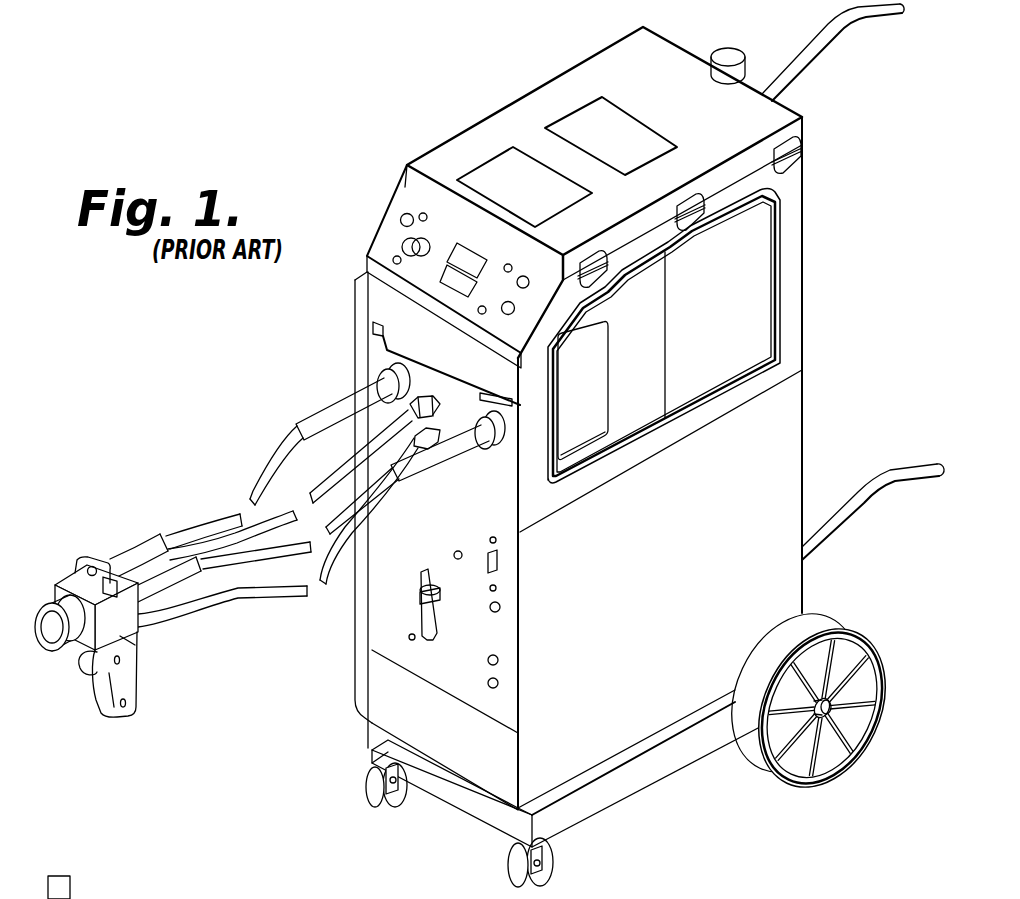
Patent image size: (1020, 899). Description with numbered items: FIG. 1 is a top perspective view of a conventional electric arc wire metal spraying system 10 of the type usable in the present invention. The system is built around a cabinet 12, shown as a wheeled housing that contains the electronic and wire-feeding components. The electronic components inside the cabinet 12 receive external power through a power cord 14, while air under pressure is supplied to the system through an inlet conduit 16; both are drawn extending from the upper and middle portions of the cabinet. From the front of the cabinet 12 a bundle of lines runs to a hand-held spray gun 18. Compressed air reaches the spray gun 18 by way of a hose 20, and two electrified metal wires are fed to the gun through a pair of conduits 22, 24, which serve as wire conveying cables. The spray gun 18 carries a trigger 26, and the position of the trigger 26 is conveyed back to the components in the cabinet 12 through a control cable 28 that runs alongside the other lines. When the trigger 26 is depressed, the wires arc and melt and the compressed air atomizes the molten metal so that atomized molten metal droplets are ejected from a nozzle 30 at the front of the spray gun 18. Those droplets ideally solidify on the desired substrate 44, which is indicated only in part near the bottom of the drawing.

The electric arc wire metal spraying system 10 is at (390, 153).
The cabinet 12 is at (791, 422).
The power cord 14 is at (858, 506).
The inlet conduit 16 is at (861, 23).
The spray gun 18 is at (131, 649).
The hose 20 is at (283, 508).
The conduit 22 is at (193, 521).
The conduit 24 is at (290, 560).
The trigger 26 is at (81, 677).
The control cable 28 is at (230, 597).
The nozzle 30 is at (42, 623).
The substrate 44 is at (118, 898).